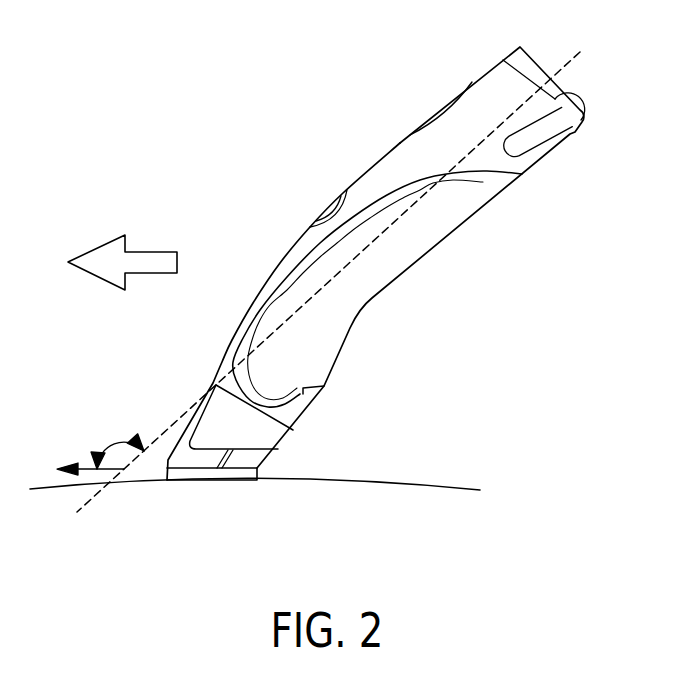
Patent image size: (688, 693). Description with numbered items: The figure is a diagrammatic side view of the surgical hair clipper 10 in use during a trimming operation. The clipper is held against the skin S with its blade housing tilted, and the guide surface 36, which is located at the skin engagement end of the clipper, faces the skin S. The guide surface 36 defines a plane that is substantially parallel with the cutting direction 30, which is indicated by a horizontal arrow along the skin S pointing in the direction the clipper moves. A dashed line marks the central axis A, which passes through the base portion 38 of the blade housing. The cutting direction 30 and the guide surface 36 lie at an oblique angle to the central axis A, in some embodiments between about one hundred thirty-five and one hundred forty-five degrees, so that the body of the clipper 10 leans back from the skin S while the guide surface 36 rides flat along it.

The surgical hair clipper 10 is at (401, 293).
The cutting direction 30 is at (94, 468).
The guide surface 36 is at (213, 482).
The base portion 38 is at (424, 117).
The central axis A is at (577, 58).
The skin S is at (440, 485).